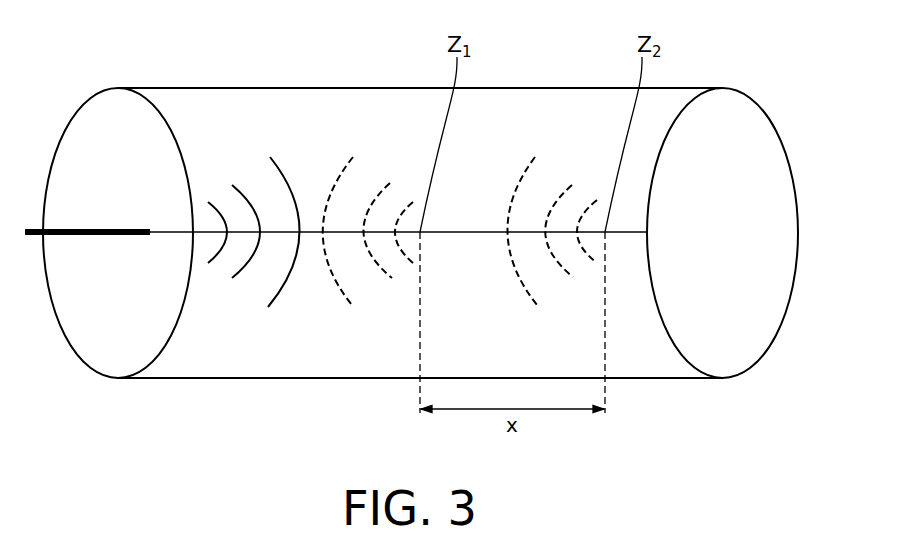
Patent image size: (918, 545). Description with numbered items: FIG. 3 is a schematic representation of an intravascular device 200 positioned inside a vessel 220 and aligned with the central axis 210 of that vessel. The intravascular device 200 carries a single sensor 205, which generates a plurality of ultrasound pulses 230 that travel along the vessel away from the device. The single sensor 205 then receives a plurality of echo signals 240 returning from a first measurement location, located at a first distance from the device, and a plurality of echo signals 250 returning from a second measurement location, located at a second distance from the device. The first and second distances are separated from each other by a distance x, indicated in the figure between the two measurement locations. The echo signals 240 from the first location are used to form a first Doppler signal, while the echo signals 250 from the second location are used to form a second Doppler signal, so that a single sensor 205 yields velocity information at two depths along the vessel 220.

The intravascular device 200 is at (90, 232).
The single sensor 205 is at (148, 214).
The central axis 210 is at (168, 232).
The vessel 220 is at (152, 88).
The ultrasound pulses 230 is at (247, 320).
The echo signals from first measurement location 240 is at (382, 148).
The echo signals from second measurement location 250 is at (564, 148).